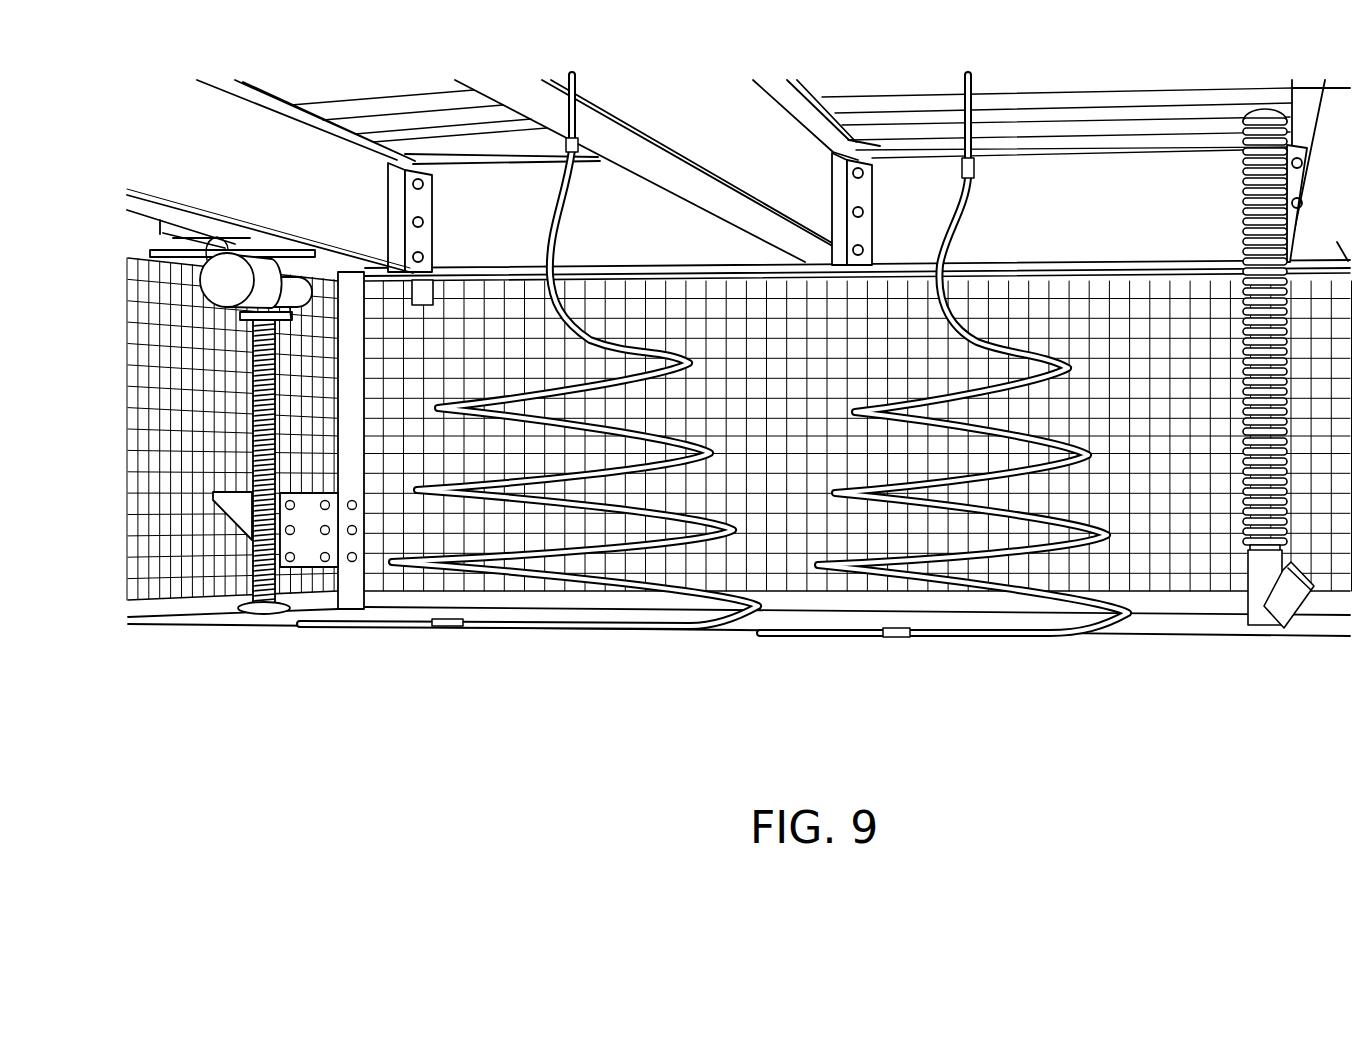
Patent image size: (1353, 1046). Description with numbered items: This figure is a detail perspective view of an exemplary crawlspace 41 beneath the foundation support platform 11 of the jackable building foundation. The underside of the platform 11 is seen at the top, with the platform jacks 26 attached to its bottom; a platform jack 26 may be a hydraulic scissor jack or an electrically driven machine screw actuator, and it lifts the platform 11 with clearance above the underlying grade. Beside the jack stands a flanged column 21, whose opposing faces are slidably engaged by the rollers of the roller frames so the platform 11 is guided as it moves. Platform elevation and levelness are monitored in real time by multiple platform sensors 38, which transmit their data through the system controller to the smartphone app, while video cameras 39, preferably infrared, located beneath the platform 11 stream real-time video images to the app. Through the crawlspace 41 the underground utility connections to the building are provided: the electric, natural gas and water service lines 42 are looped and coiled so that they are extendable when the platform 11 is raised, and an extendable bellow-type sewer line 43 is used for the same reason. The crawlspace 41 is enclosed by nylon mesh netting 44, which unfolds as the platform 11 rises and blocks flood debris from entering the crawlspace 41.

The foundation support platform 11 is at (1053, 205).
The flanged column 21 is at (298, 399).
The platform jack 26 is at (230, 262).
The platform sensor 38 is at (398, 172).
The video camera 39 is at (430, 290).
The crawlspace 41 is at (510, 692).
The service lines 42 is at (868, 652).
The sewer line 43 is at (1273, 650).
The nylon mesh netting 44 is at (770, 386).